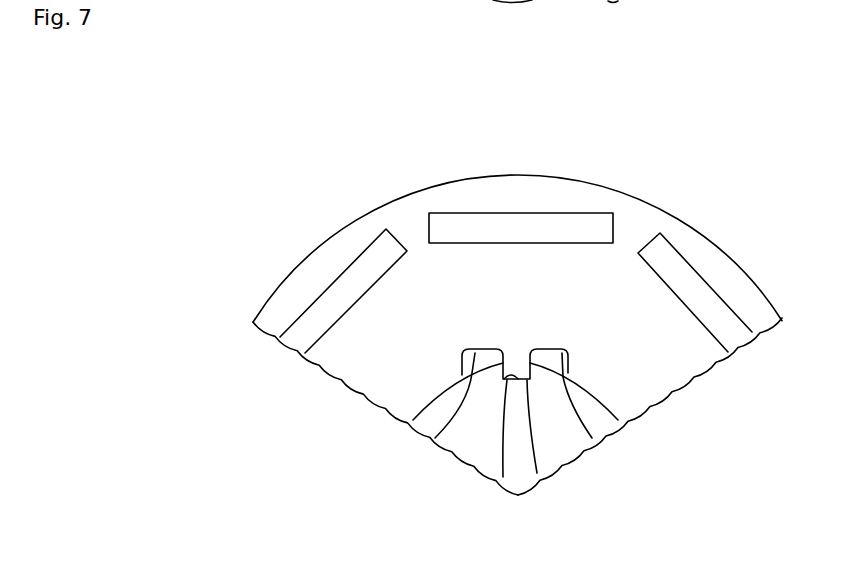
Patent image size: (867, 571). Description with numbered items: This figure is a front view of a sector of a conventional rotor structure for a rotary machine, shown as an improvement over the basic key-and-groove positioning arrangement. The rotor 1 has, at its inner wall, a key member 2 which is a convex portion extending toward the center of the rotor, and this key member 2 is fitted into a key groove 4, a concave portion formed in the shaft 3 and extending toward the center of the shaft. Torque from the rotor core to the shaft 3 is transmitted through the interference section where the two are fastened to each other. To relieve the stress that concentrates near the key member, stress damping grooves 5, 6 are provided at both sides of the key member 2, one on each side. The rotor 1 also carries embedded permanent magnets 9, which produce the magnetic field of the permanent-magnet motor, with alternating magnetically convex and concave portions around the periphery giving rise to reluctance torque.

The rotor 1 is at (557, 195).
The key member 2 is at (537, 473).
The shaft 3 is at (478, 438).
The key groove 4 is at (503, 477).
The stress damping groove 5 is at (435, 438).
The stress damping groove 6 is at (592, 438).
The permanent magnet 9 is at (682, 275).